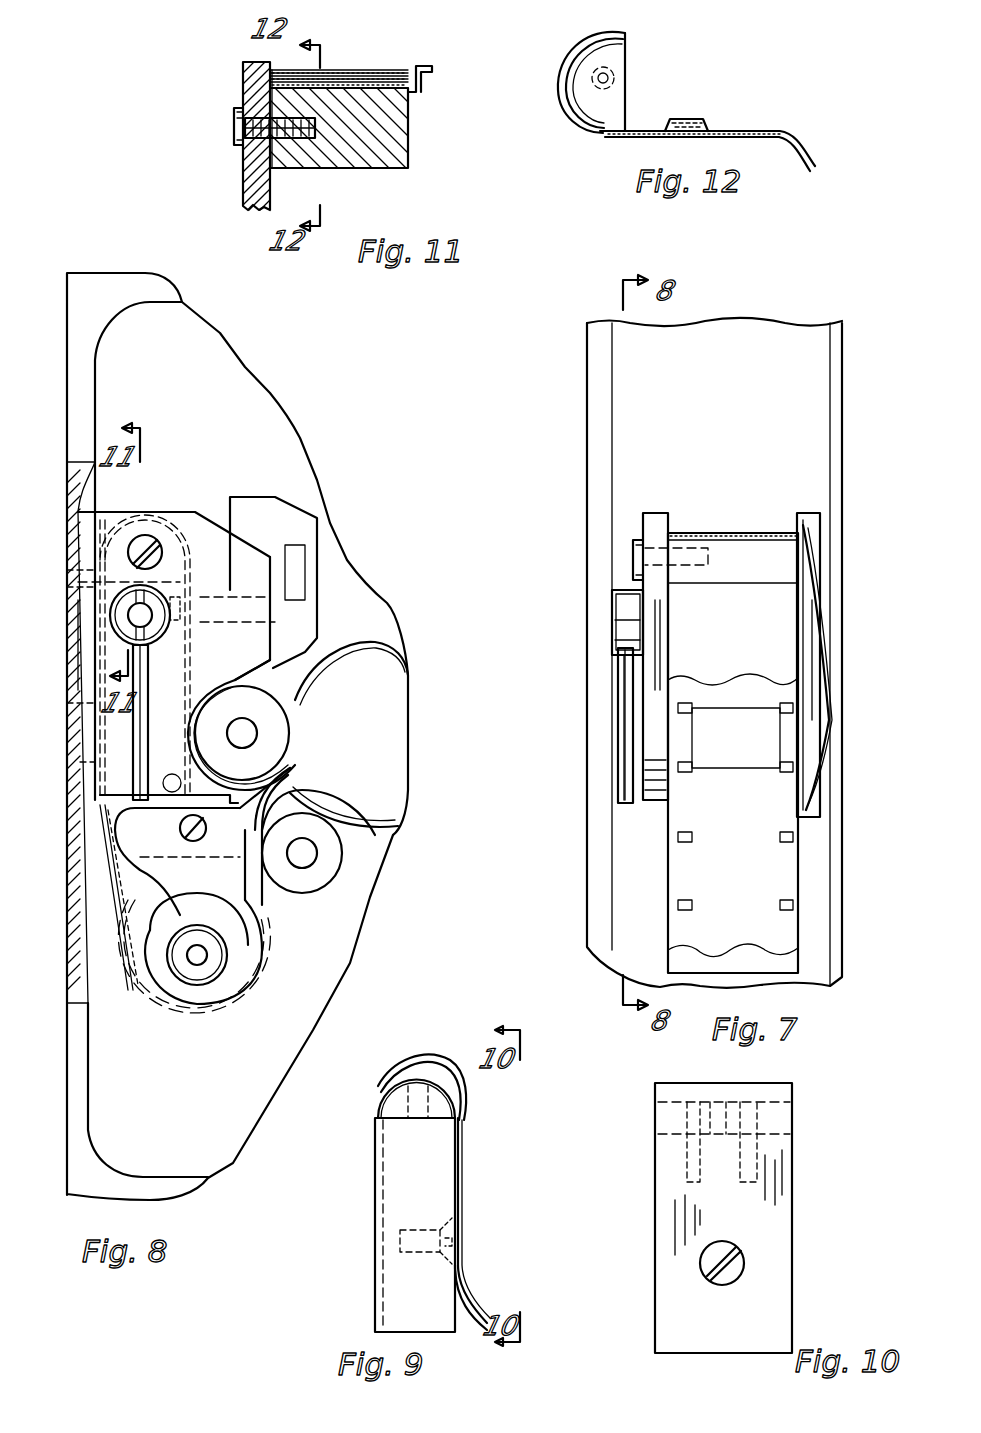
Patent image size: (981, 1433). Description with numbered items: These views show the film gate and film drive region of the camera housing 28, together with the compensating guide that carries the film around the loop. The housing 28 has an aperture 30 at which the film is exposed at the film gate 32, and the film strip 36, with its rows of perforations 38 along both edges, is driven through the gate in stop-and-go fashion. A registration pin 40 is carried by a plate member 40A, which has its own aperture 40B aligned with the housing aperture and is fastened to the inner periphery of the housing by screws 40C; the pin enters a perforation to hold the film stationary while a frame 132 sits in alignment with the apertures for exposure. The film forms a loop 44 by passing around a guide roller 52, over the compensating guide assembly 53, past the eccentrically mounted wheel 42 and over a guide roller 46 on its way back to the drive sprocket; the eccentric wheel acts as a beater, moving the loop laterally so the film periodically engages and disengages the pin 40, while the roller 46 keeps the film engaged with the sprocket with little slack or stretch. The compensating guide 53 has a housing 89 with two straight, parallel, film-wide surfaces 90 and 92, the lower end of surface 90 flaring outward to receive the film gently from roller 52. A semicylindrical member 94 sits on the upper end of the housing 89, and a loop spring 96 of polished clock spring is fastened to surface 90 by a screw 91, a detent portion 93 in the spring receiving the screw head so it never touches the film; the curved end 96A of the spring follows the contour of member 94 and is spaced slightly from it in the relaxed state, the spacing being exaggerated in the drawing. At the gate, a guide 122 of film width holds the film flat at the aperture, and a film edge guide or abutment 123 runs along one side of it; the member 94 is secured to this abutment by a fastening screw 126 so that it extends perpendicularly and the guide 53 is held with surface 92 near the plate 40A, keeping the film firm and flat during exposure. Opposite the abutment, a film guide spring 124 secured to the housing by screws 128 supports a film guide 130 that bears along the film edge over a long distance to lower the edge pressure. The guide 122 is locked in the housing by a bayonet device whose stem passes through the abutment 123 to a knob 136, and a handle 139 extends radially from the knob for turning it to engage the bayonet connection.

In FIG. 7, the housing 28 is at (838, 390).
In FIG. 8, the aperture 30 is at (75, 758).
In FIG. 7, the film gate 32 is at (625, 712).
In FIG. 8, the film gate 32 is at (105, 530).
In FIG. 11, the film strip 36 is at (345, 85).
In FIG. 7, the film strip 36 is at (768, 535).
In FIG. 7, the perforations 38 is at (780, 905).
In FIG. 8, the registration pin means 40 is at (98, 905).
In FIG. 8, the plate member 40A is at (78, 637).
In FIG. 8, the aperture 40B is at (85, 760).
In FIG. 8, the screws 40C is at (68, 578).
In FIG. 8, the eccentrically mounted wheel means 42 is at (210, 1024).
In FIG. 8, the loop 44 is at (262, 924).
In FIG. 8, the guide roller 46 is at (330, 856).
In FIG. 8, the guide roller 52 is at (270, 725).
In FIG. 8, the compensating guide assembly means 53 is at (165, 545).
In FIG. 9, the compensating guide assembly means 53 is at (464, 1185).
In FIG. 10, the compensating guide assembly means 53 is at (806, 1118).
In FIG. 9, the housing 89 is at (405, 1210).
In FIG. 9, the surface 90 is at (458, 1131).
In FIG. 10, the surface 90 is at (745, 1225).
In FIG. 10, the screw 91 is at (730, 1272).
In FIG. 9, the surface 92 is at (383, 1167).
In FIG. 12, the detent portion 93 is at (690, 118).
In FIG. 11, the semicylindrical member 94 is at (288, 172).
In FIG. 12, the semicylindrical member 94 is at (626, 62).
In FIG. 7, the semicylindrical member 94 is at (684, 555).
In FIG. 9, the semicylindrical member 94 is at (397, 1102).
In FIG. 11, the loop spring 96 is at (393, 85).
In FIG. 9, the loop spring 96 is at (463, 1155).
In FIG. 10, the loop spring 96 is at (735, 1100).
In FIG. 9, the curved end of spring 96A is at (432, 1058).
In FIG. 7, the guide means 122 is at (660, 520).
In FIG. 11, the film edge guide member 123 is at (255, 95).
In FIG. 7, the film edge guide member 123 is at (655, 585).
In FIG. 8, the film edge guide member 123 is at (240, 578).
In FIG. 7, the film guide spring 124 is at (800, 595).
In FIG. 11, the fastening screw 126 is at (236, 127).
In FIG. 12, the fastening screw 126 is at (607, 79).
In FIG. 7, the fastening screw 126 is at (637, 548).
In FIG. 8, the fastening screw 126 is at (147, 535).
In FIG. 7, the screws 128 is at (822, 642).
In FIG. 11, the film guide 130 is at (421, 72).
In FIG. 7, the film guide 130 is at (800, 662).
In FIG. 7, the frame 132 is at (736, 738).
In FIG. 7, the knob member 136 is at (628, 630).
In FIG. 8, the knob member 136 is at (172, 622).
In FIG. 7, the handle 139 is at (625, 772).
In FIG. 8, the handle 139 is at (135, 770).